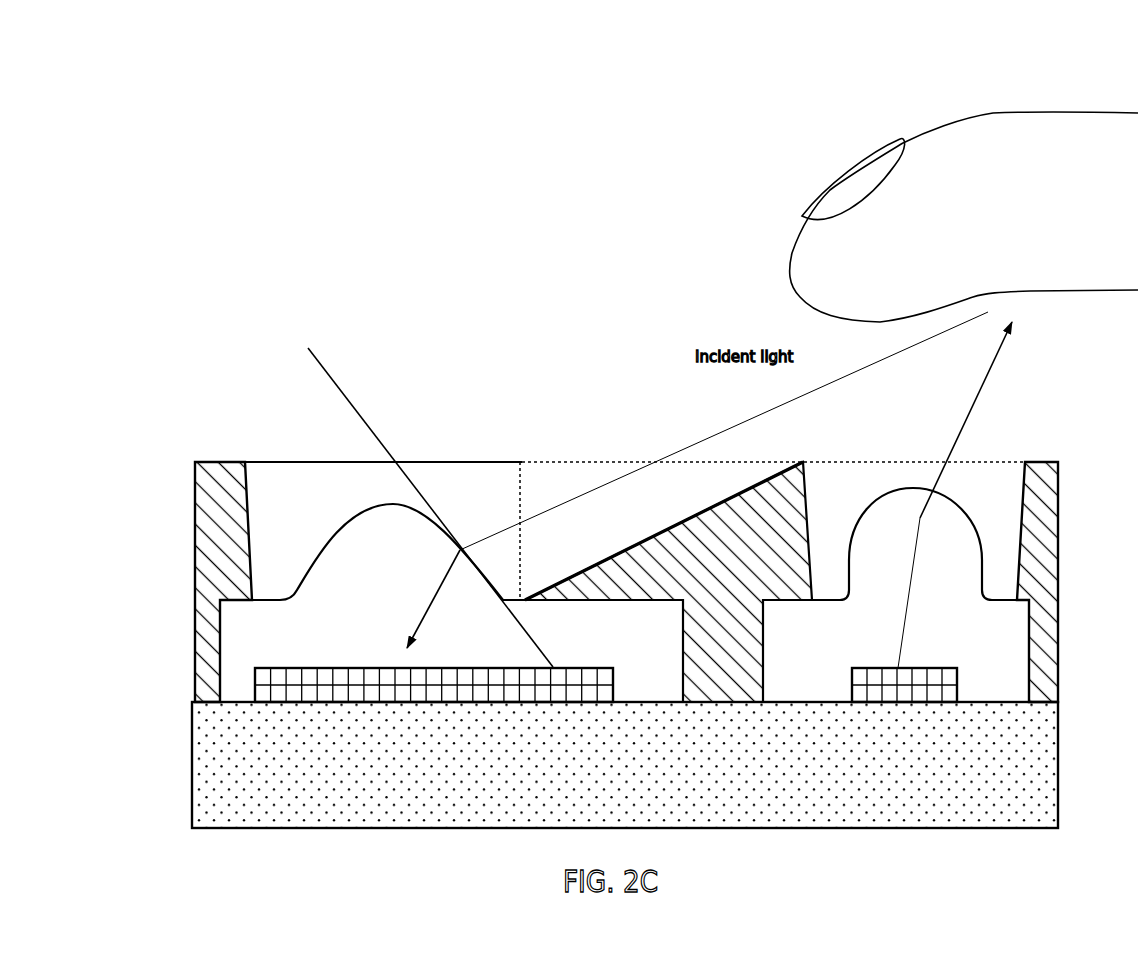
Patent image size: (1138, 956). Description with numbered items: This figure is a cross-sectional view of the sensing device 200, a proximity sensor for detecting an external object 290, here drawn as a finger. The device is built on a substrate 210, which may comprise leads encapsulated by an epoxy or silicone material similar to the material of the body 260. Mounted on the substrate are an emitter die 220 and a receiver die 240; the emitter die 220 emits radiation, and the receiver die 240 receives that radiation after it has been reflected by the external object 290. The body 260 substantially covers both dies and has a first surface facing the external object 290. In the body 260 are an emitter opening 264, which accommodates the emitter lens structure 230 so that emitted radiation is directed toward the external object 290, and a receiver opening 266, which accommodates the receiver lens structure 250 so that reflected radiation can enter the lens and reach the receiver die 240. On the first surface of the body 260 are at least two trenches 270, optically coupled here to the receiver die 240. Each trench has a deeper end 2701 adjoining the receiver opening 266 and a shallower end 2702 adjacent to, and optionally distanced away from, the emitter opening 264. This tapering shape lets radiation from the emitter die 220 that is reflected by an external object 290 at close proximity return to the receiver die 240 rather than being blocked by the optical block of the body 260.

The sensing device 200 is at (291, 338).
The substrate 210 is at (686, 770).
The emitter die 220 is at (930, 690).
The emitter lens structure 230 is at (846, 654).
The receiver die 240 is at (575, 690).
The receiver lens structure 250 is at (388, 610).
The body 260 is at (743, 574).
The emitter opening 264 is at (983, 478).
The receiver opening 266 is at (415, 477).
The trenches 270 is at (638, 518).
The deeper end 2701 is at (573, 492).
The shallower end 2702 is at (738, 477).
The external object 290 is at (1038, 220).